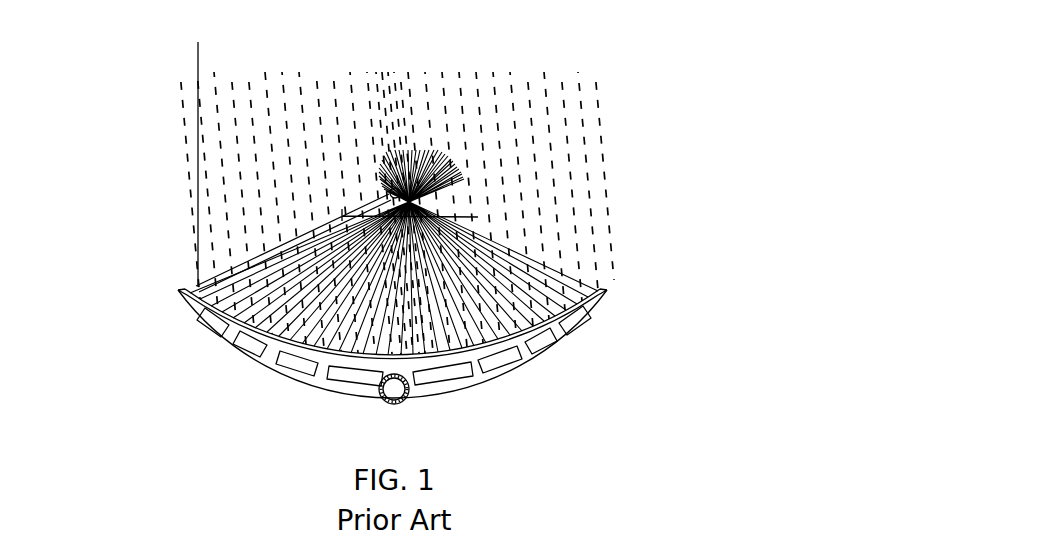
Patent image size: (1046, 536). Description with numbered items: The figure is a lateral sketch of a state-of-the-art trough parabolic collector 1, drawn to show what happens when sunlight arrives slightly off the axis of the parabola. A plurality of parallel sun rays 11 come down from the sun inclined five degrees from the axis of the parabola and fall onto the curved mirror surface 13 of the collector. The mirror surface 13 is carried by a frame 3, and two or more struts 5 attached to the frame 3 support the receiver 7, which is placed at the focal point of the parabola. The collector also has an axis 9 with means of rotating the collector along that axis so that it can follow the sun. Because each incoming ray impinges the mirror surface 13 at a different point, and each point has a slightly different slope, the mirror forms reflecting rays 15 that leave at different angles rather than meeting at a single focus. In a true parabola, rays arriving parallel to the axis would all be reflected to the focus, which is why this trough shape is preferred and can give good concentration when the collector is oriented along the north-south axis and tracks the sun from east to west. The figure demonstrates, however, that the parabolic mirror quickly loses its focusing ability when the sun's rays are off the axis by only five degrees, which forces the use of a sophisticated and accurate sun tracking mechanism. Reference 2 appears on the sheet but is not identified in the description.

The parabolic collector 1 is at (150, 120).
The ground/base 2 is at (633, 535).
The frame 3 is at (520, 350).
The struts 5 is at (530, 252).
The receiver 7 is at (413, 185).
The axis 9 is at (394, 389).
The parallel sun rays 11 is at (585, 163).
The mirror surface 13 is at (185, 290).
The reflecting rays 15 is at (305, 265).